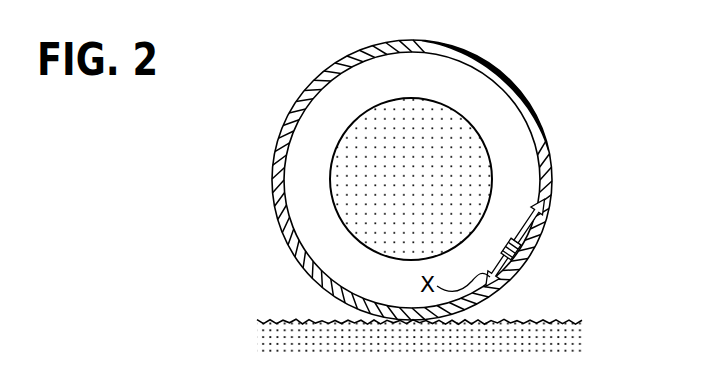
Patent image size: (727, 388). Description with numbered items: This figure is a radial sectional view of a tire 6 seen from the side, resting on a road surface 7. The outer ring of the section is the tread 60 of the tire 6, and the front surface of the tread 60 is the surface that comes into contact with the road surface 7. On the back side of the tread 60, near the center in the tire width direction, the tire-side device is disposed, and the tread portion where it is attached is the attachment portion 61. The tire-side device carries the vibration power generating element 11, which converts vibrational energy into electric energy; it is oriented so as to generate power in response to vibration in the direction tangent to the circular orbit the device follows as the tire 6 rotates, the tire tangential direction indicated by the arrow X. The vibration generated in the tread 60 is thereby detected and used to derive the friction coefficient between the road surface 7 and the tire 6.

The tire 6 is at (507, 62).
The tread 60 is at (530, 107).
The attachment portion 61 is at (535, 266).
The vibration power generating element 11 is at (506, 247).
The road surface 7 is at (297, 323).